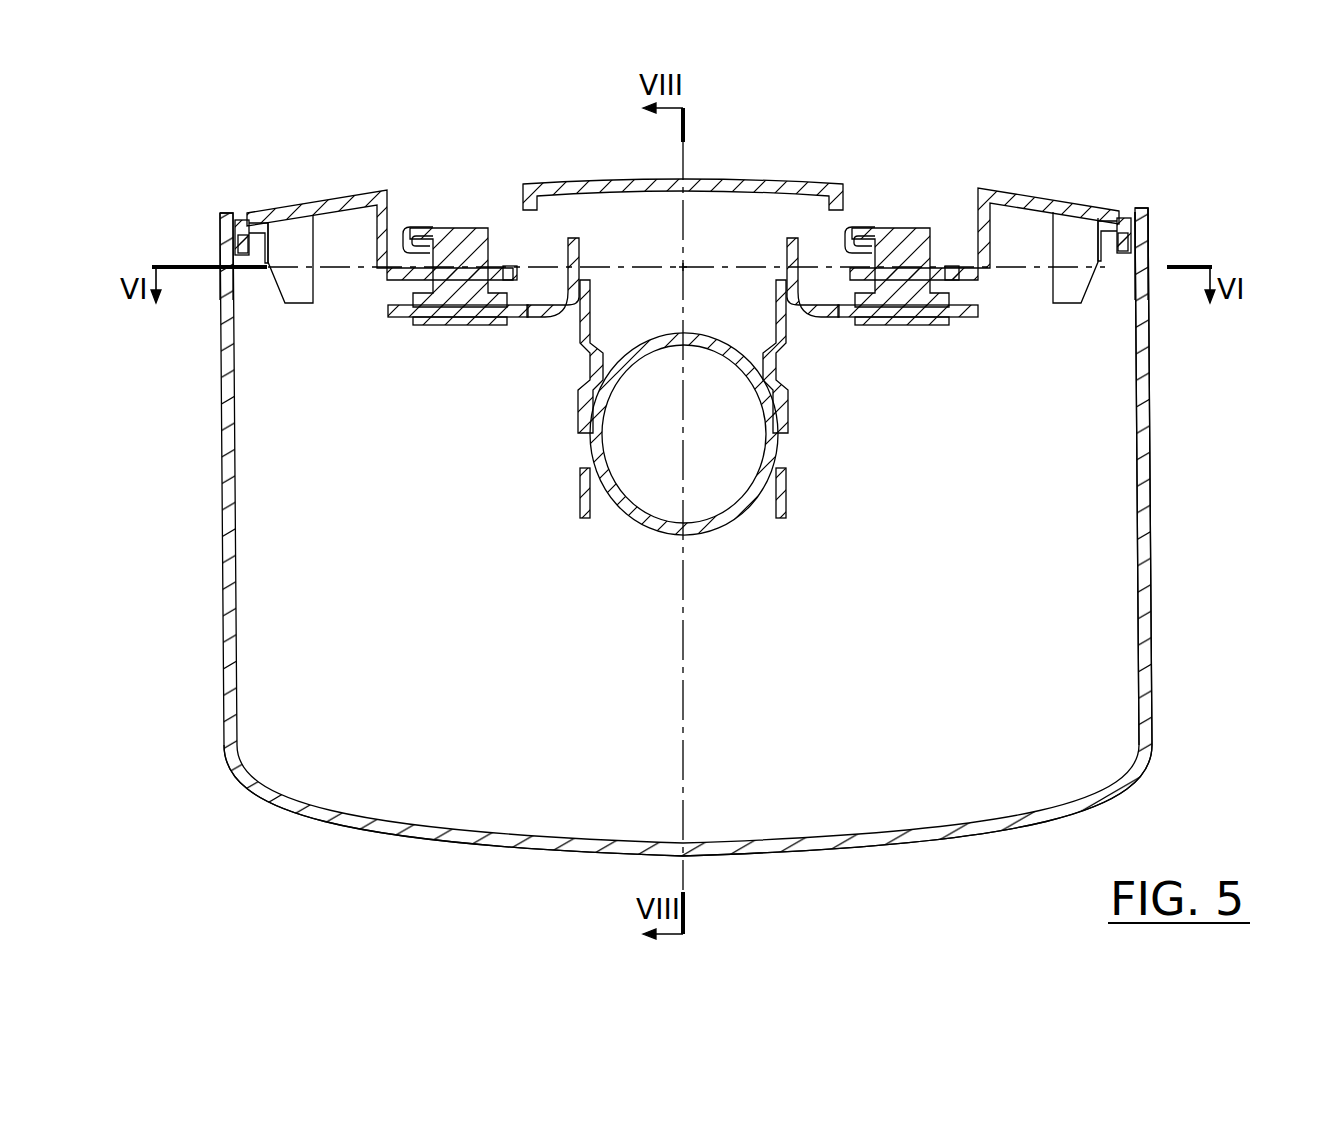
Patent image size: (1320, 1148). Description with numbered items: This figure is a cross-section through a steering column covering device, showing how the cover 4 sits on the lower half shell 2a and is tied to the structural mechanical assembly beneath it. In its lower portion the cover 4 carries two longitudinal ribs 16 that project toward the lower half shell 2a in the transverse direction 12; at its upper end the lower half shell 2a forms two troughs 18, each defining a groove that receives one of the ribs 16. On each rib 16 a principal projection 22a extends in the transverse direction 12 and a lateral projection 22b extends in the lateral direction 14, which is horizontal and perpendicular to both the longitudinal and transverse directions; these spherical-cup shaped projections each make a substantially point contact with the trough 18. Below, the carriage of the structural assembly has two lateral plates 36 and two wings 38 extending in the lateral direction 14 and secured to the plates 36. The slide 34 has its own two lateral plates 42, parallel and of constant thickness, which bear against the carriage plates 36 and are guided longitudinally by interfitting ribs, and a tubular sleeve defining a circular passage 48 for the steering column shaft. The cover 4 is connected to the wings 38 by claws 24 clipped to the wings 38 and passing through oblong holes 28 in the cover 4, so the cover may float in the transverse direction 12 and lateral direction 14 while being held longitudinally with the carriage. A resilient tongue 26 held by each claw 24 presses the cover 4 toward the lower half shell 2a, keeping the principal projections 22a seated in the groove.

The lower half shell 2a is at (697, 564).
The cover 4 is at (343, 192).
The transverse direction 12 is at (688, 857).
The lateral direction 14 is at (1153, 268).
The longitudinal ribs 16 is at (689, 256).
The troughs 18 is at (230, 385).
The principal projection 22a is at (245, 258).
The lateral projection 22b is at (1196, 215).
The claws 24 is at (470, 240).
The resilient tongue 26 is at (433, 232).
The oblong holes 28 is at (507, 266).
The slide 34 is at (683, 404).
The lateral plates 36 is at (579, 245).
The wings 38 is at (520, 318).
The lateral plates 42 is at (582, 412).
The passage 48 is at (748, 457).